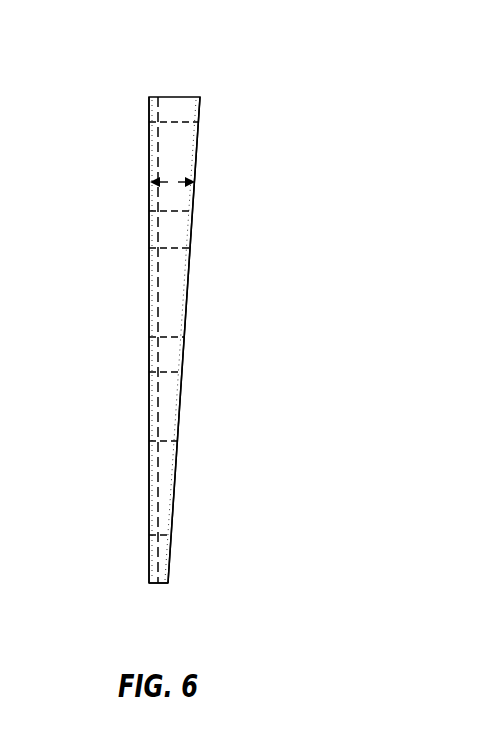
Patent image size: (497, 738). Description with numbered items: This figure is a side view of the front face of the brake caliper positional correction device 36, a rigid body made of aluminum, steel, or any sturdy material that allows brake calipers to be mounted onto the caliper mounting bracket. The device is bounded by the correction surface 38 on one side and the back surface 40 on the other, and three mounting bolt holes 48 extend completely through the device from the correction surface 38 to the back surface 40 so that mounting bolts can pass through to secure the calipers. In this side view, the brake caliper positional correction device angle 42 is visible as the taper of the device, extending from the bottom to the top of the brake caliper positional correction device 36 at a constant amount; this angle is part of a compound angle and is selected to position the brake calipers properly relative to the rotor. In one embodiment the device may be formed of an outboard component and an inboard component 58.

The brake caliper positional correction device 36 is at (129, 50).
The correction surface 38 is at (194, 297).
The back surface 40 is at (141, 392).
The brake caliper positional correction device angle 42 is at (172, 179).
The mounting bolt holes 48 is at (155, 165).
The inboard component 58 is at (170, 563).